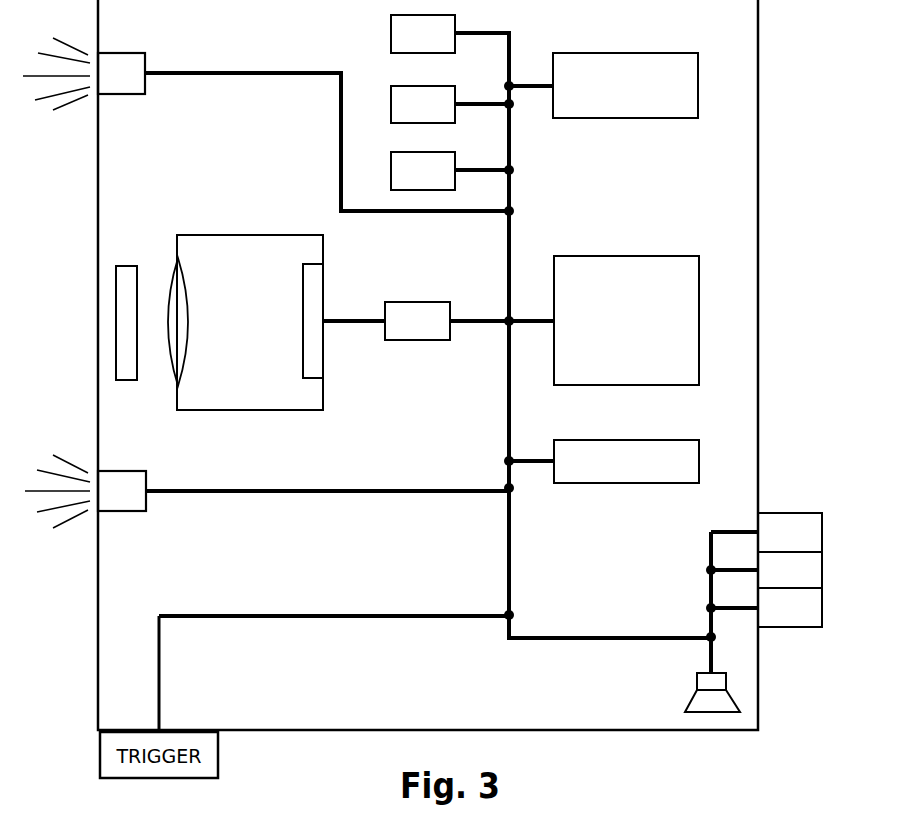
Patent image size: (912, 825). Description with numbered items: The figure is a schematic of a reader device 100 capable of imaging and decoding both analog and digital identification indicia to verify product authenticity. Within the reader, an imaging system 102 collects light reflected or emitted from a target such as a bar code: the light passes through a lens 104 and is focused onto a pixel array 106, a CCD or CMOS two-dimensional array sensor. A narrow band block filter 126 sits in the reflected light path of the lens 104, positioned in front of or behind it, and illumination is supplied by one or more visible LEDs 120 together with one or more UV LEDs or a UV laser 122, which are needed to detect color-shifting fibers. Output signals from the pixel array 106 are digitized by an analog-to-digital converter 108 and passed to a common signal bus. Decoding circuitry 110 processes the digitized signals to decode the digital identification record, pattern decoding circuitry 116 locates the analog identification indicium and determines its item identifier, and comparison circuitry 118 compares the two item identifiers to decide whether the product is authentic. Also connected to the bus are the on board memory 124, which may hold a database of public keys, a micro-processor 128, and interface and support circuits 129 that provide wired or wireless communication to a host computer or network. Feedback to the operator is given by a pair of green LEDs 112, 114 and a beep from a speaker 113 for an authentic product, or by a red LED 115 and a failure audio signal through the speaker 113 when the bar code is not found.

The reader device 100 is at (782, 105).
The imaging system 102 is at (242, 218).
The lens 104 is at (192, 327).
The pixel array 106 is at (302, 315).
The analog-to-digital converter 108 is at (417, 321).
The decoding circuitry 110 is at (423, 34).
The green LED 112 is at (823, 538).
The speaker 113 is at (714, 700).
The green LED 114 is at (823, 570).
The red LED 115 is at (823, 612).
The pattern decoding circuitry 116 is at (423, 104).
The comparison circuitry 118 is at (423, 171).
The visible LED 120 is at (128, 53).
The UV LED or UV laser 122 is at (130, 471).
The on board memory 124 is at (699, 68).
The narrow band block filter 126 is at (127, 265).
The micro-processor 128 is at (699, 346).
The interface and support circuits 129 is at (699, 458).